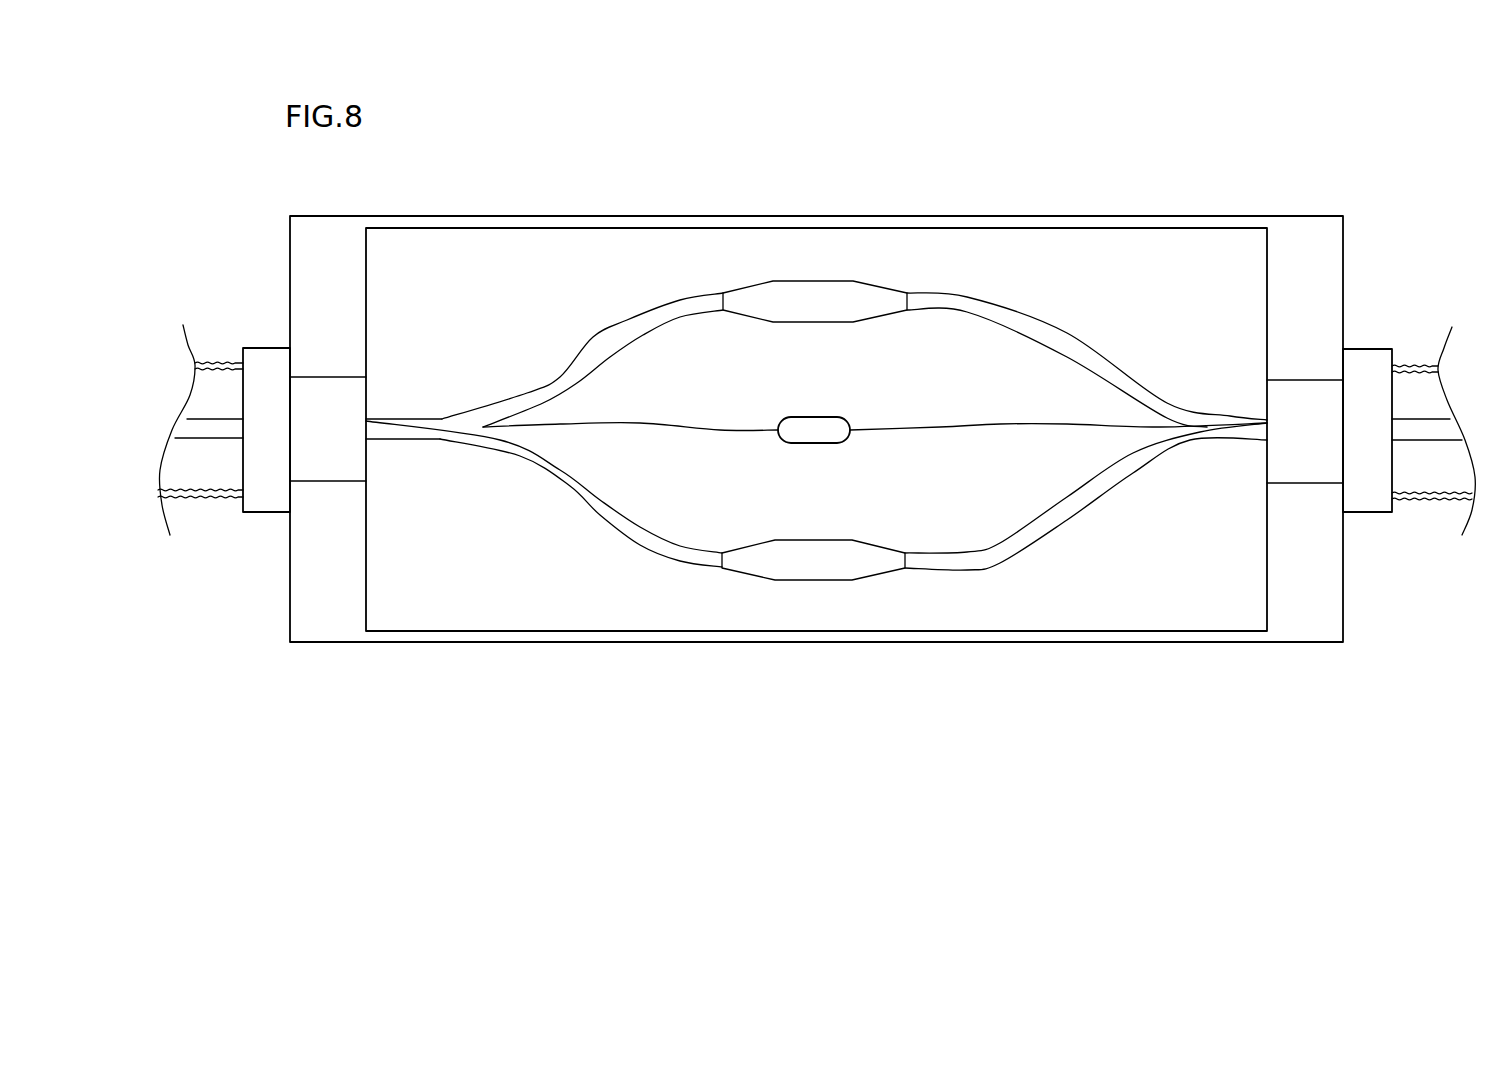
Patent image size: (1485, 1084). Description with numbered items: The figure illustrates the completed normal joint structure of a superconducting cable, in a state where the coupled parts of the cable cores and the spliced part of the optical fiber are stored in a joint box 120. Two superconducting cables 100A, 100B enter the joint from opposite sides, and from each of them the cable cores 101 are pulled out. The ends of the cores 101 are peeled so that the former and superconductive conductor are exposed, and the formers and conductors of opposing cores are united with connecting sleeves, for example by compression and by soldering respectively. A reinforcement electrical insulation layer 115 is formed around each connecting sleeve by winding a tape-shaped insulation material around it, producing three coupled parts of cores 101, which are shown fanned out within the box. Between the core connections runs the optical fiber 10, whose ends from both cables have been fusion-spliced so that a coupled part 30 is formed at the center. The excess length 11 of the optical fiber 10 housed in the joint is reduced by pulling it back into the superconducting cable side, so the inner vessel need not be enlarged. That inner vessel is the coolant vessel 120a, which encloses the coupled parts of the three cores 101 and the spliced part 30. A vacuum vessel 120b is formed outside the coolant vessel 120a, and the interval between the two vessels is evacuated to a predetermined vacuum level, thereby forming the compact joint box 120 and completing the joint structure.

The superconducting cable 100A is at (237, 362).
The superconducting cable 100B is at (1422, 500).
The cable core 101 is at (220, 440).
The reinforcement electrical insulation layer 115 is at (758, 281).
The optical fiber 10 is at (728, 430).
The excess length 11 is at (938, 430).
The coupled part 30 is at (828, 416).
The joint box 120 is at (753, 703).
The coolant vessel 120a is at (668, 631).
The vacuum vessel 120b is at (735, 642).